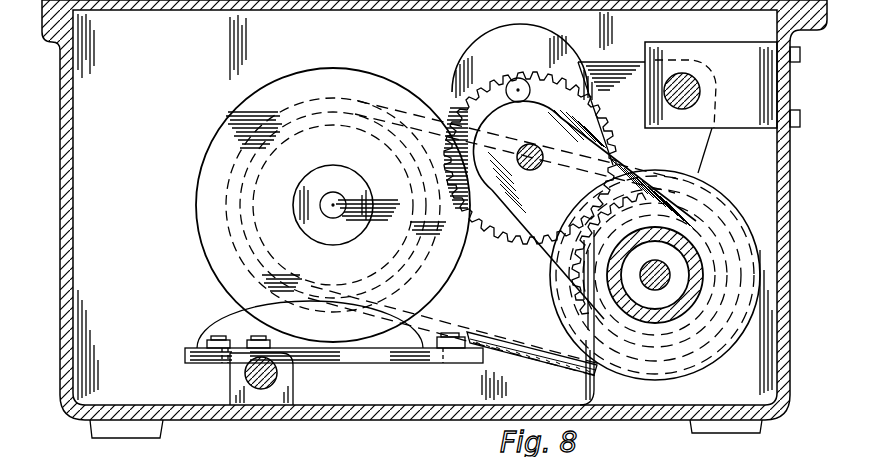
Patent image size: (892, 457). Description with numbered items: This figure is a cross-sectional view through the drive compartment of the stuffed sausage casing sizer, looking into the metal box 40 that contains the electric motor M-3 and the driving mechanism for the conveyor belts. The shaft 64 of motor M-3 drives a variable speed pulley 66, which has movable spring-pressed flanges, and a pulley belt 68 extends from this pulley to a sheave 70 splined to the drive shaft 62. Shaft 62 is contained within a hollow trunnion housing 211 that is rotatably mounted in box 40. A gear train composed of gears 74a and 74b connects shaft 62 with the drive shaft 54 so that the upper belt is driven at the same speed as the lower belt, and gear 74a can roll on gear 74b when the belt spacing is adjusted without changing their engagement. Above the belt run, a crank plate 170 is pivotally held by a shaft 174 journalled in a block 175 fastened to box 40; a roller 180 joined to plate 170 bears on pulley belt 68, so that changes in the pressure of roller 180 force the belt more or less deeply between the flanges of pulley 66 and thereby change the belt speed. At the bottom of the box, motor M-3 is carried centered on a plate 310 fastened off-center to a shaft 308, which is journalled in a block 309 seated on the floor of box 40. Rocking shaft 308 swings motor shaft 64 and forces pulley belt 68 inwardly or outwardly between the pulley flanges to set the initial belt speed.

The metal box 40 is at (60, 385).
The variable speed pulley 66 is at (230, 182).
The shaft of motor 64 is at (346, 198).
The electric motor M-3 is at (226, 288).
The plate 310 is at (185, 356).
The block 309 is at (230, 386).
The shaft 308 is at (293, 377).
The pulley belt 68 is at (494, 312).
The roller 180 is at (466, 50).
The gear 74a is at (496, 250).
The drive shaft 54 is at (533, 145).
The sheave 70 is at (758, 183).
The gear 74b is at (573, 308).
The drive shaft 62 is at (668, 259).
The hollow trunnion housing 211 is at (682, 297).
The crank plate 170 is at (636, 47).
The block 175 is at (745, 32).
The shaft 174 is at (700, 88).